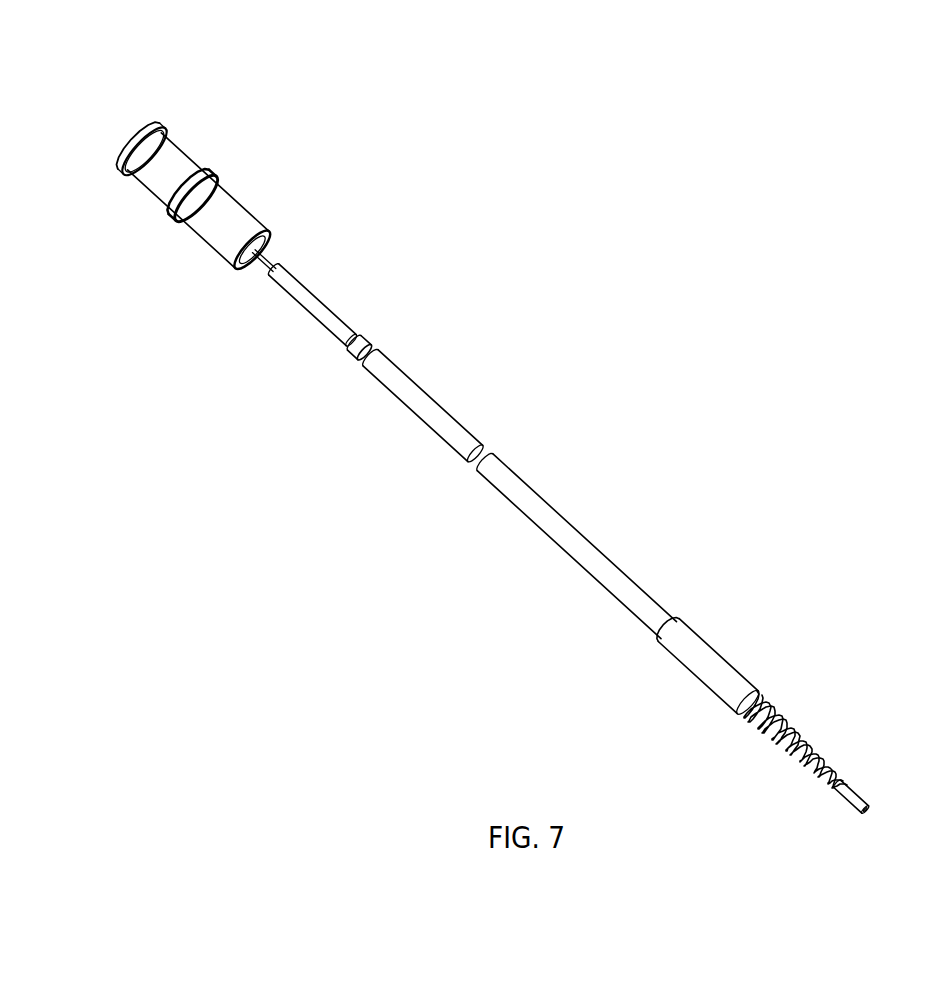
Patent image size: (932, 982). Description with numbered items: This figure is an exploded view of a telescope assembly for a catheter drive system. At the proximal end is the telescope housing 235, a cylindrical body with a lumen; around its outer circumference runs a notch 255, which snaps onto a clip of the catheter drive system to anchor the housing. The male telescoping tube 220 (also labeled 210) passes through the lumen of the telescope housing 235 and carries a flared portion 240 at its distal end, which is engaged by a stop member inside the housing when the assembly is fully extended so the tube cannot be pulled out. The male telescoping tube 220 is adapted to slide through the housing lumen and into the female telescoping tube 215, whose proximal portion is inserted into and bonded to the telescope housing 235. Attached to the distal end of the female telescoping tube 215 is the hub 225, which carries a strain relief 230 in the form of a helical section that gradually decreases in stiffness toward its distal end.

The male telescoping tube 210 is at (802, 213).
The telescope housing 235 is at (233, 200).
The notch 255 is at (202, 170).
The male telescoping tube 220 is at (315, 315).
The flared portion 240 is at (363, 338).
The female telescoping tube 215 is at (578, 540).
The hub 225 is at (727, 705).
The strain relief 230 is at (767, 710).